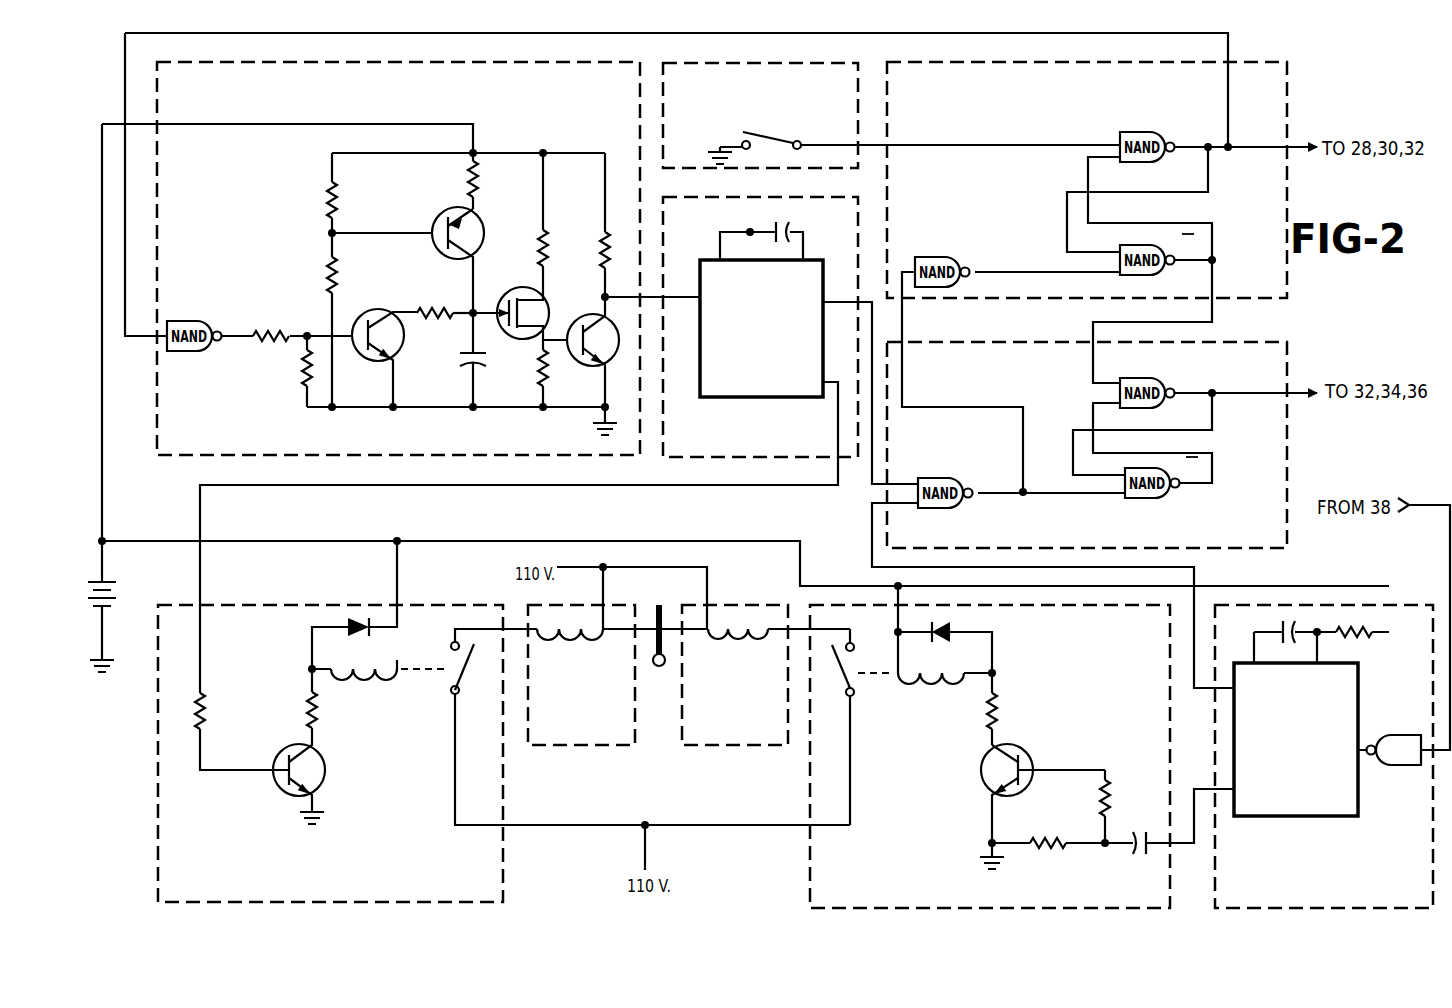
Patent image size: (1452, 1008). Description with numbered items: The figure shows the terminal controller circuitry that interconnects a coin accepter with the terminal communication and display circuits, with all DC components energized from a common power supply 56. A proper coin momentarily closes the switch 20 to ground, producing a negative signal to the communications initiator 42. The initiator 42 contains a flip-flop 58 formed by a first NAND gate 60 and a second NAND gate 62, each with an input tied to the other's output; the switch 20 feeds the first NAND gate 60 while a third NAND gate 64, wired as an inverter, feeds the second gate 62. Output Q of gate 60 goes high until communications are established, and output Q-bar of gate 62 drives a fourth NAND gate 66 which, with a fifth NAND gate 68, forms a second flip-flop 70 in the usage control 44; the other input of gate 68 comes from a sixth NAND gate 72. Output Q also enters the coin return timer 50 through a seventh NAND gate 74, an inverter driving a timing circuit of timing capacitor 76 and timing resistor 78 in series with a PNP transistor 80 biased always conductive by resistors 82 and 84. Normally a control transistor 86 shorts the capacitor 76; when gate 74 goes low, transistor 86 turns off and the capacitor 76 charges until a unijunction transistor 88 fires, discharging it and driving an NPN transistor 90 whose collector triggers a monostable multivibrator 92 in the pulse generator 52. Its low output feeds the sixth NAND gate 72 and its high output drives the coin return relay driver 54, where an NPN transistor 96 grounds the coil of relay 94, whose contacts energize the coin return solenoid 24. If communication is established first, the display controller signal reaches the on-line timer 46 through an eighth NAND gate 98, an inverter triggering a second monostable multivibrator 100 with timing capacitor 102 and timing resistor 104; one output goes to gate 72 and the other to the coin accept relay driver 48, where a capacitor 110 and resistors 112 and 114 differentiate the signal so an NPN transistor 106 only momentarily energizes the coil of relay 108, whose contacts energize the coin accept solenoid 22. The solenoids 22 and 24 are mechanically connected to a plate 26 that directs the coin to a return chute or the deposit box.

The switch 20 is at (768, 150).
The first solenoid 22 is at (740, 625).
The second solenoid 24 is at (574, 627).
The plate 26 is at (658, 605).
The communications initiator circuit 42 is at (1277, 80).
The usage control circuit 44 is at (1278, 350).
The on-line timer 46 is at (1413, 610).
The coin accept relay driver 48 is at (810, 861).
The coin return timer 50 is at (158, 388).
The pulse generator 52 is at (691, 199).
The coin return relay driver 54 is at (499, 861).
The power supply 56 is at (123, 594).
The flip-flop 58 is at (1168, 241).
The first NAND gate 60 is at (1156, 132).
The second NAND gate 62 is at (1118, 247).
The third NAND gate 64 is at (951, 255).
The fourth NAND gate 66 is at (1136, 377).
The fifth NAND gate 68 is at (1172, 496).
The second flip-flop 70 is at (1148, 432).
The sixth NAND gate 72 is at (943, 478).
The seventh NAND gate 74 is at (202, 319).
The timing capacitor 76 is at (459, 359).
The timing resistor 78 is at (478, 184).
The PNP transistor 80 is at (442, 210).
The resistor 82 is at (328, 196).
The resistor 84 is at (328, 275).
The control transistor 86 is at (387, 308).
The unijunction transistor 88 is at (526, 286).
The NPN transistor 90 is at (592, 316).
The monostable multivibrator 92 is at (704, 259).
The relay 94 is at (416, 688).
The NPN transistor 96 is at (296, 745).
The eighth NAND gate 98 is at (1412, 735).
The second monostable multivibrator 100 is at (1358, 690).
The timing capacitor 102 is at (1276, 629).
The timing resistor 104 is at (1360, 636).
The NPN transistor 106 is at (1031, 753).
The relay 108 is at (892, 690).
The capacitor 110 is at (1150, 829).
The resistor 112 is at (1048, 837).
The resistor 114 is at (1099, 805).